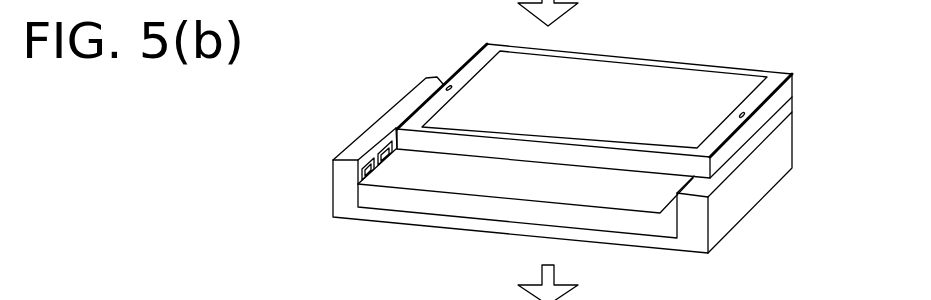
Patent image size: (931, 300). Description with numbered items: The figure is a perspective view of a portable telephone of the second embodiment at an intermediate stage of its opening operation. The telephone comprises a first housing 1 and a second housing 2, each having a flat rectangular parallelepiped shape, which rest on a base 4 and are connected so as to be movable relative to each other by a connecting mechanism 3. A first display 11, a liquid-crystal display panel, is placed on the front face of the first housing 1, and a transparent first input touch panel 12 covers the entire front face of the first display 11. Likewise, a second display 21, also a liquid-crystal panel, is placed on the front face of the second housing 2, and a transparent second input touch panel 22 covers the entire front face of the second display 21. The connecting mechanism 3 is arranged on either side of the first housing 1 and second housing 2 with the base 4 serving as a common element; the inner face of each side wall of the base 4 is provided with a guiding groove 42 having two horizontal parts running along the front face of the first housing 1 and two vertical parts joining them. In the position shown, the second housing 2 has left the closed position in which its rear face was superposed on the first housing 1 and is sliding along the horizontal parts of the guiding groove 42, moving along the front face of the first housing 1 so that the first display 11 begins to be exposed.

The first housing 1 is at (392, 202).
The second housing 2 is at (746, 67).
The connecting mechanism 3 is at (385, 127).
The base 4 is at (752, 193).
The first display 11 is at (525, 234).
The first input touch panel 12 is at (442, 182).
The second display 21 is at (594, 151).
The second input touch panel 22 is at (648, 75).
The guiding groove 42 is at (378, 152).